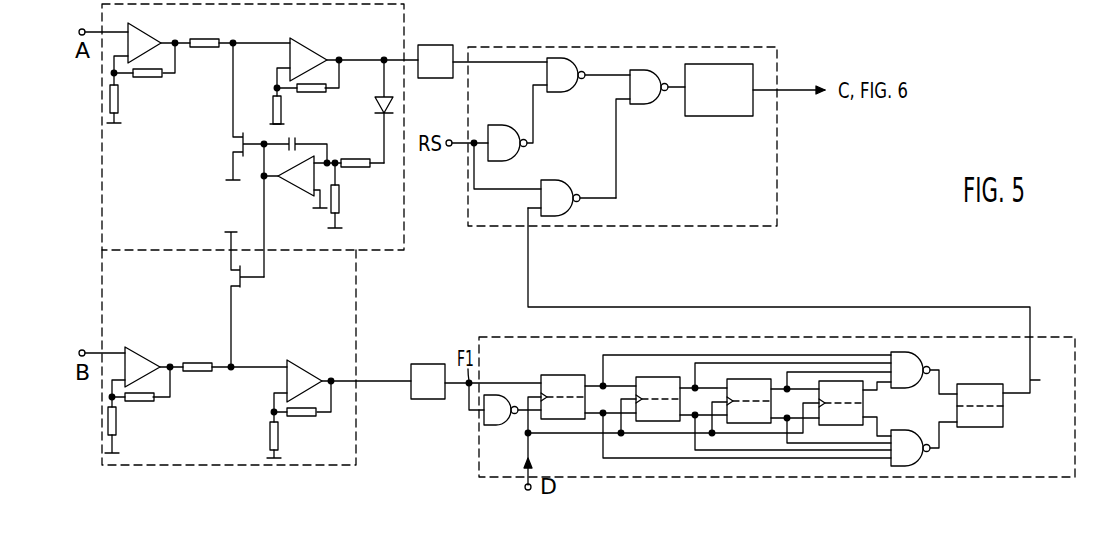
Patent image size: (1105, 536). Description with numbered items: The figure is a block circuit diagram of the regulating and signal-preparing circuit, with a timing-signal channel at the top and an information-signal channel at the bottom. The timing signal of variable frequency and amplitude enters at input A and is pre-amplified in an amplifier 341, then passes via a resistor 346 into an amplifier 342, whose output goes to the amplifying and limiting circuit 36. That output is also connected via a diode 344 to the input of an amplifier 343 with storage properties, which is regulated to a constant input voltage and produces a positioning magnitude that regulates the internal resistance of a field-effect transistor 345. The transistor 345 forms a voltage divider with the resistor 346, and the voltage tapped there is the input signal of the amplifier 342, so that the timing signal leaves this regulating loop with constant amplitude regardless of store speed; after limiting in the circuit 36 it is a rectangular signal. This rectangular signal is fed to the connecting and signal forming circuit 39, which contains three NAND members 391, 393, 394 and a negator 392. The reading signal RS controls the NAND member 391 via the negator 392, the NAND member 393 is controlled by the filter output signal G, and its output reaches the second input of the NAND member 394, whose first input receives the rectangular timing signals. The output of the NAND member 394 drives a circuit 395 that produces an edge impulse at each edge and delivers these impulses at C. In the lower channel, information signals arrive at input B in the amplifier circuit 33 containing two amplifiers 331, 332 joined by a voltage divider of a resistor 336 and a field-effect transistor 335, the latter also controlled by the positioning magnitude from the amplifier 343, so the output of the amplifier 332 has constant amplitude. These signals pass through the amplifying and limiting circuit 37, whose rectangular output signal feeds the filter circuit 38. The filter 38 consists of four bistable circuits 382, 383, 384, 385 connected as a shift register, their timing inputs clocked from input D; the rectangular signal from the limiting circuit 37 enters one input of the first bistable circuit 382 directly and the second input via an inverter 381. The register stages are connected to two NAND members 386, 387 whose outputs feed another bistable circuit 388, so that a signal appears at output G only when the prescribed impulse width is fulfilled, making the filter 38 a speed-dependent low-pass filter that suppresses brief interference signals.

The regulating amplifier 33 is at (356, 456).
The amplifier 331 is at (145, 353).
The amplifier 332 is at (300, 362).
The field-effect transistor 335 is at (230, 273).
The resistor 336 is at (204, 373).
The amplifier 341 is at (149, 38).
The amplifier 342 is at (309, 49).
The amplifier with storage properties 343 is at (302, 183).
The diode 344 is at (374, 104).
The field-effect transistor 345 is at (232, 148).
The resistor 346 is at (206, 39).
The limiting amplifier 36 is at (437, 45).
The limiting amplifier 37 is at (428, 364).
The filter circuit 38 is at (1054, 339).
The inverter 381 is at (495, 427).
The bistable circuit 382 is at (559, 374).
The bistable circuit 383 is at (652, 377).
The bistable circuit 384 is at (750, 379).
The bistable circuit 385 is at (863, 416).
The NAND member 386 is at (922, 361).
The NAND member 387 is at (924, 454).
The bistable circuit 388 is at (1004, 419).
The connecting and signal forming circuit 39 is at (668, 47).
The NAND member 391 is at (566, 94).
The negator 392 is at (498, 124).
The NAND member 393 is at (566, 180).
The NAND member 394 is at (645, 104).
The circuit for producing edge impulses 395 is at (742, 116).